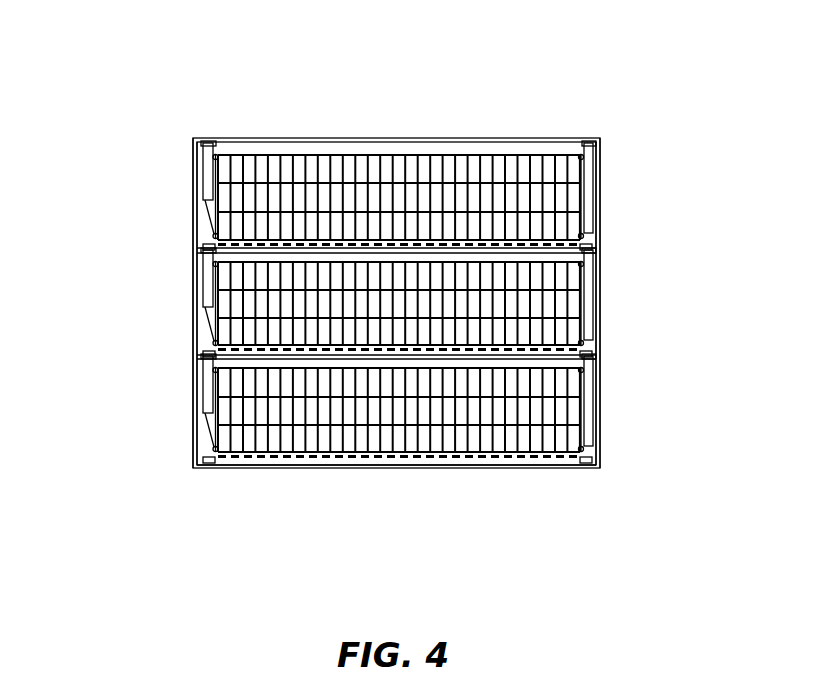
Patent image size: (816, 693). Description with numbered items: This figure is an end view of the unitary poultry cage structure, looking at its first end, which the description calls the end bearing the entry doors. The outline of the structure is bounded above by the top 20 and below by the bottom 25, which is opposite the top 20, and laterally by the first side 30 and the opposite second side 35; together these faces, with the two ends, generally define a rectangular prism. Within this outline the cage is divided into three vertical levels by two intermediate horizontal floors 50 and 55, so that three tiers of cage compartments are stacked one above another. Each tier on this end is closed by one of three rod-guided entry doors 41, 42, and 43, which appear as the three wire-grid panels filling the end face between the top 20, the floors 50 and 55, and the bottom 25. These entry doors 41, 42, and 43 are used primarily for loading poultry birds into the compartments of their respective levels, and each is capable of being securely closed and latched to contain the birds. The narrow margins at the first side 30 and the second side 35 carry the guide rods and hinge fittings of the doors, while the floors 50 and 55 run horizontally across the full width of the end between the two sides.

The top 20 is at (386, 126).
The bottom 25 is at (386, 476).
The first side 30 is at (183, 330).
The second side 35 is at (613, 325).
The entry door 41 is at (545, 200).
The entry door 42 is at (545, 305).
The entry door 43 is at (545, 413).
The intermediate horizontal floor 50 is at (590, 245).
The intermediate horizontal floor 55 is at (590, 354).